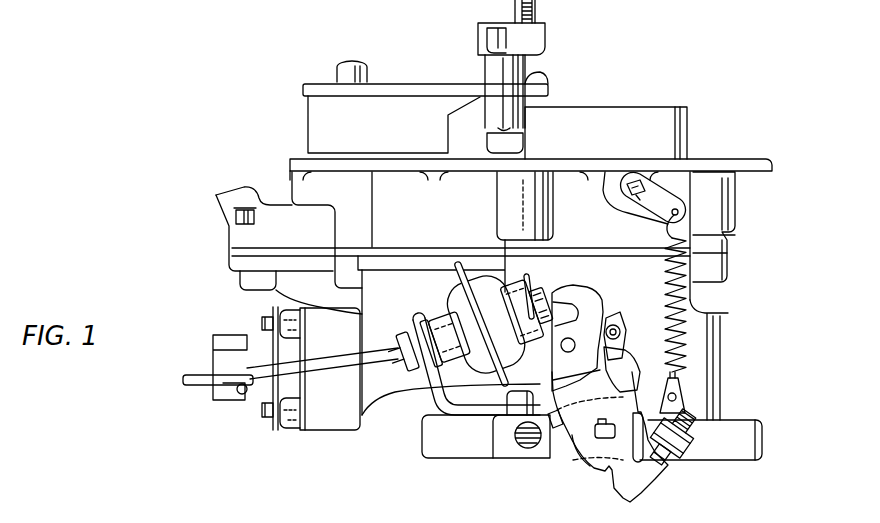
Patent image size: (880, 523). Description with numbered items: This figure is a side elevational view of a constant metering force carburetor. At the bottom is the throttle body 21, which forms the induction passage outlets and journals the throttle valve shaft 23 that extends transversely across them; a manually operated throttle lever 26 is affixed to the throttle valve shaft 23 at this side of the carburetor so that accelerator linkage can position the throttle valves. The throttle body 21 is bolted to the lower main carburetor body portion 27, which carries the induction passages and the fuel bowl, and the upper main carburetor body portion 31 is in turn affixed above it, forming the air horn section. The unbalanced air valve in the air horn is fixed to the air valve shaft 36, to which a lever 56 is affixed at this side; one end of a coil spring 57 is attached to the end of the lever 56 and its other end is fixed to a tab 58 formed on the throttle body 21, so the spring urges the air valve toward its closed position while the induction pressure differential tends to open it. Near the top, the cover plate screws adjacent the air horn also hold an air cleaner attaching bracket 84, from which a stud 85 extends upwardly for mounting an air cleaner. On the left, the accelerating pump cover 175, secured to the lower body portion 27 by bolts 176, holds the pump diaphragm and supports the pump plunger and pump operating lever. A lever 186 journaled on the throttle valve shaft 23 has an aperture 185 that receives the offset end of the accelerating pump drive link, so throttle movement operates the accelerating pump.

The stud 85 is at (542, 13).
The air cleaner attaching bracket 84 is at (537, 36).
The air valve shaft 36 is at (644, 198).
The upper main carburetor body portion 31 is at (722, 200).
The lever 56 is at (668, 226).
The coil spring 57 is at (664, 242).
The lever 186 is at (612, 325).
The aperture 185 is at (621, 326).
The lower main carburetor body portion 27 is at (721, 312).
The throttle lever 26 is at (616, 364).
The tab 58 is at (679, 396).
The throttle body 21 is at (738, 420).
The throttle valve shaft 23 is at (603, 428).
The bolts 176 is at (262, 324).
The accelerating pump cover 175 is at (295, 316).